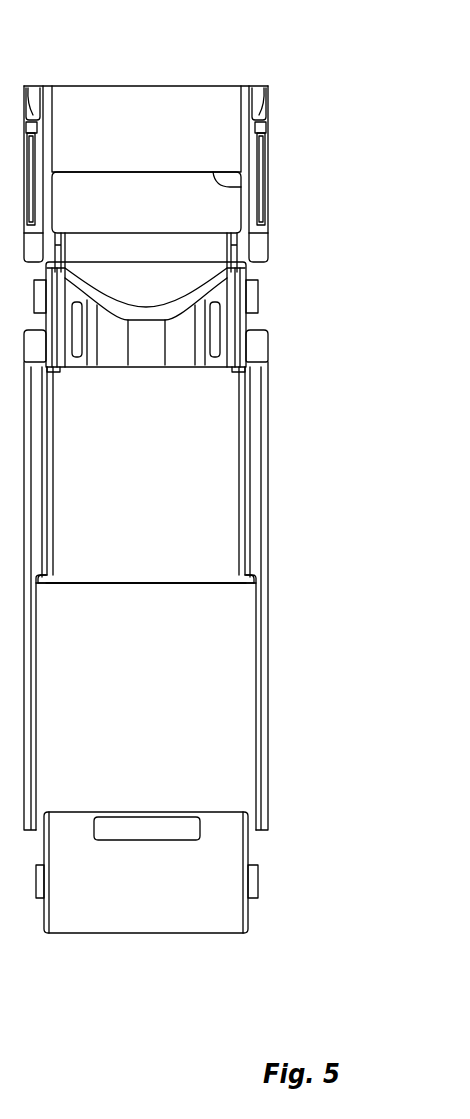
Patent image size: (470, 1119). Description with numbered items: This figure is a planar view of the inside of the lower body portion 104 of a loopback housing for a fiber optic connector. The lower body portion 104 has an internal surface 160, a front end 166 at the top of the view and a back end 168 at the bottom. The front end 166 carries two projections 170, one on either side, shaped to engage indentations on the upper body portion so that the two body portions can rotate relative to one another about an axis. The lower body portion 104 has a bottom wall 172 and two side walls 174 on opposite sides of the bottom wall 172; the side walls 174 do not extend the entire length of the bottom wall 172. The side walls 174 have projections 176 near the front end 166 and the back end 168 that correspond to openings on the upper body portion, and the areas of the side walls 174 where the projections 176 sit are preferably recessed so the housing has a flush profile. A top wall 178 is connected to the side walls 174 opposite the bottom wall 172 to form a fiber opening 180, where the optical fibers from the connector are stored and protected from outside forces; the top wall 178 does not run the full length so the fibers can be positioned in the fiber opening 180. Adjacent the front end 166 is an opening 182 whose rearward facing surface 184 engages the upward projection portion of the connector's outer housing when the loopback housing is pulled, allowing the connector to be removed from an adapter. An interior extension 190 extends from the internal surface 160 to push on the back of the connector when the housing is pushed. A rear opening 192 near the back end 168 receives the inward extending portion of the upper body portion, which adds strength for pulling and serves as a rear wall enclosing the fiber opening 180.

The lower body portion 104 is at (204, 486).
The internal surface 160 is at (189, 253).
The front end 166 is at (179, 135).
The back end 168 is at (189, 883).
The projections 170 is at (258, 104).
The bottom wall 172 is at (224, 424).
The side walls 174 is at (185, 702).
The projections 176 is at (258, 295).
The top wall 178 is at (206, 695).
The fiber opening 180 is at (172, 583).
The opening 182 is at (193, 198).
The rearward facing surface 184 is at (230, 186).
The interior extension 190 is at (207, 290).
The rear opening 192 is at (193, 830).